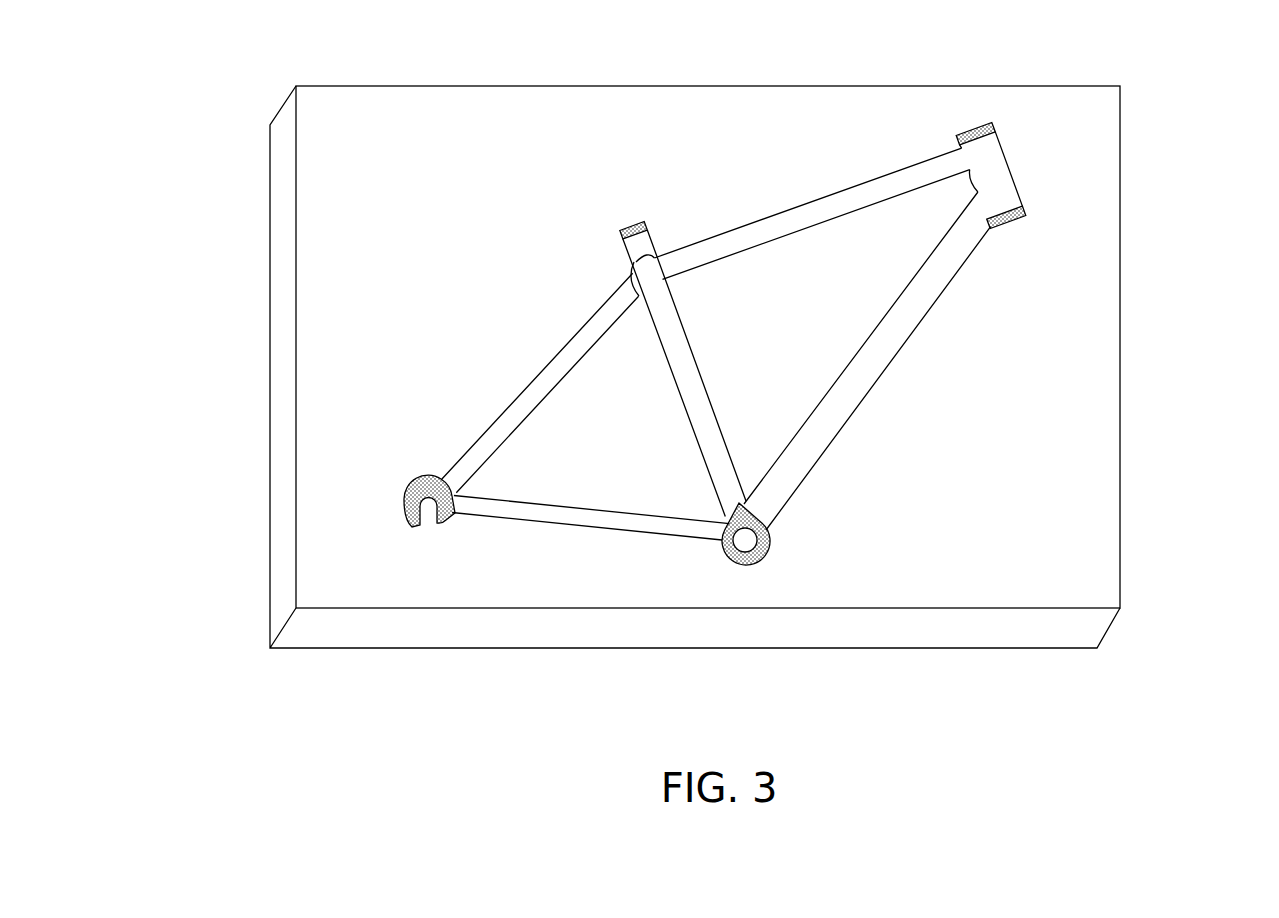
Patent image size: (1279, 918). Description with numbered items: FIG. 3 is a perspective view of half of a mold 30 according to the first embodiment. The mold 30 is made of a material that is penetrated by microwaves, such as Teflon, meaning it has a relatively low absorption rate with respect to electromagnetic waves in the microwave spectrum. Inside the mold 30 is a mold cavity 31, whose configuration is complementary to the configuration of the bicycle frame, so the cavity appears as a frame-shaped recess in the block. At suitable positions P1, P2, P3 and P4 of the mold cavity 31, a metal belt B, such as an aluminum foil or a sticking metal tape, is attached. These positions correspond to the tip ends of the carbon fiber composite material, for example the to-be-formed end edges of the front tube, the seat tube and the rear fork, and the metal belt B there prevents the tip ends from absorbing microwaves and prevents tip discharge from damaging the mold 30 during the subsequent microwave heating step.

The mold 30 is at (1078, 318).
The mold cavity 31 is at (685, 369).
The suitable position P1 is at (1003, 187).
The suitable position P2 is at (673, 233).
The suitable position P3 is at (405, 492).
The bottom bracket portion P4 is at (767, 545).
The metal belt B is at (632, 223).